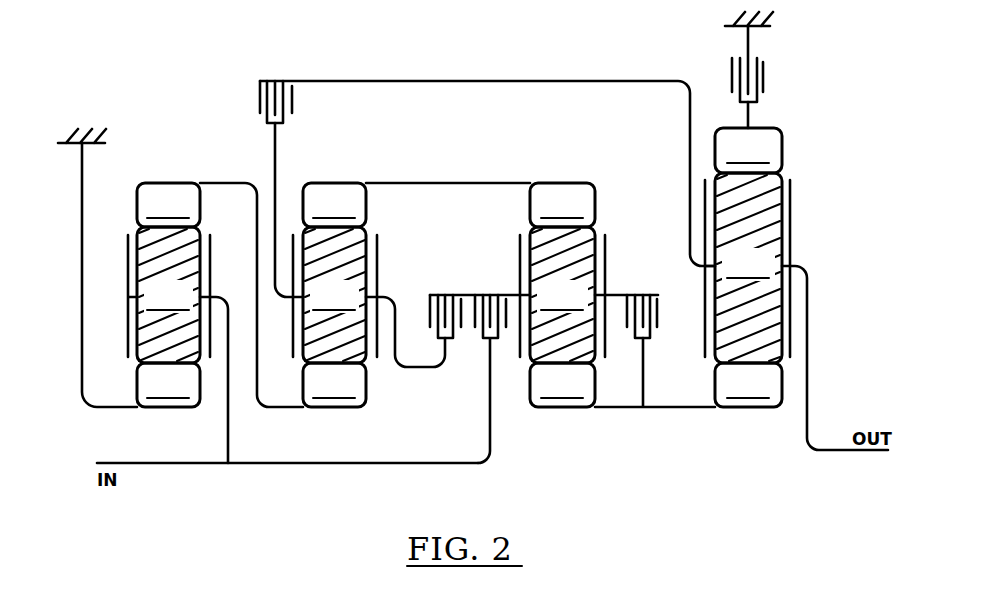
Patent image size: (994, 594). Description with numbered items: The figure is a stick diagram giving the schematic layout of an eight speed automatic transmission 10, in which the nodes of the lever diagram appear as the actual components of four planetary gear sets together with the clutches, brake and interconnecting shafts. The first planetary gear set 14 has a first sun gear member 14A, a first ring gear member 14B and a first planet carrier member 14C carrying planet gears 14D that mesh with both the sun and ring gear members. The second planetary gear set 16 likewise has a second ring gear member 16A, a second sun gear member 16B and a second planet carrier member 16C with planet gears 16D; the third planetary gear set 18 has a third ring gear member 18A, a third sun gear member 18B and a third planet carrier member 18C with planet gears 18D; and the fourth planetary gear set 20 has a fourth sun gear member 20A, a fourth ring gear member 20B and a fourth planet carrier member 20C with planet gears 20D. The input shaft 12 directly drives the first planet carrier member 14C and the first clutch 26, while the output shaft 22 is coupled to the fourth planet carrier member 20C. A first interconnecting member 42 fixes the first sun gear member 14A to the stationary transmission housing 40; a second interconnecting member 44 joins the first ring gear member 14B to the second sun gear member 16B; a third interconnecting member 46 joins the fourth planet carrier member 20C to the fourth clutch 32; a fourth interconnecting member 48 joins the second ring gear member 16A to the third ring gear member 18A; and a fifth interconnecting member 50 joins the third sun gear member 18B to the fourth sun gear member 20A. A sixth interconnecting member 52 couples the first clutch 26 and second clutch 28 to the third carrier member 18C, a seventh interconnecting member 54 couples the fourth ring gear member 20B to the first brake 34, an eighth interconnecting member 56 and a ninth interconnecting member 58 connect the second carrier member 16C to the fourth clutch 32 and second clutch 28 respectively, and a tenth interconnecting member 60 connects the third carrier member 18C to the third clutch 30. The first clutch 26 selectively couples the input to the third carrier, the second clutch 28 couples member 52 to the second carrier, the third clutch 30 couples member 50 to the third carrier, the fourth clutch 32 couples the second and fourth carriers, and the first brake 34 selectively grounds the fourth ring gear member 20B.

The eight speed transmission 10 is at (195, 68).
The input shaft 12 is at (150, 465).
The first planetary gear set 14 is at (175, 323).
The first sun gear member 14A is at (168, 385).
The first ring gear member 14B is at (168, 205).
The first planet carrier member 14C is at (212, 257).
The planet gears 14D is at (168, 295).
The second planetary gear set 16 is at (359, 318).
The second ring gear member 16A is at (334, 205).
The second sun gear member 16B is at (334, 385).
The second planet carrier member 16C is at (380, 257).
The planet gears 16D is at (334, 295).
The third planetary gear set 18 is at (585, 318).
The third ring gear member 18A is at (562, 205).
The third sun gear member 18B is at (562, 385).
The third planet carrier member 18C is at (607, 258).
The planet gears 18D is at (562, 295).
The fourth planetary gear set 20 is at (766, 290).
The fourth sun gear member 20A is at (748, 385).
The fourth ring gear member 20B is at (748, 150).
The fourth planet carrier member 20C is at (795, 232).
The planet gears 20D is at (748, 268).
The output shaft 22 is at (870, 455).
The first clutch 26 is at (485, 340).
The second clutch 28 is at (430, 318).
The third clutch 30 is at (660, 322).
The fourth clutch 32 is at (260, 105).
The first brake 34 is at (765, 80).
The transmission housing 40 is at (90, 145).
The first interconnecting member 42 is at (78, 242).
The second interconnecting member 44 is at (218, 183).
The third interconnecting member 46 is at (460, 81).
The fourth interconnecting member 48 is at (460, 183).
The fifth interconnecting member 50 is at (665, 405).
The sixth interconnecting member 52 is at (478, 295).
The seventh interconnecting member 54 is at (750, 118).
The eighth interconnecting member 56 is at (277, 157).
The ninth interconnecting member 58 is at (418, 372).
The tenth interconnecting member 60 is at (608, 290).